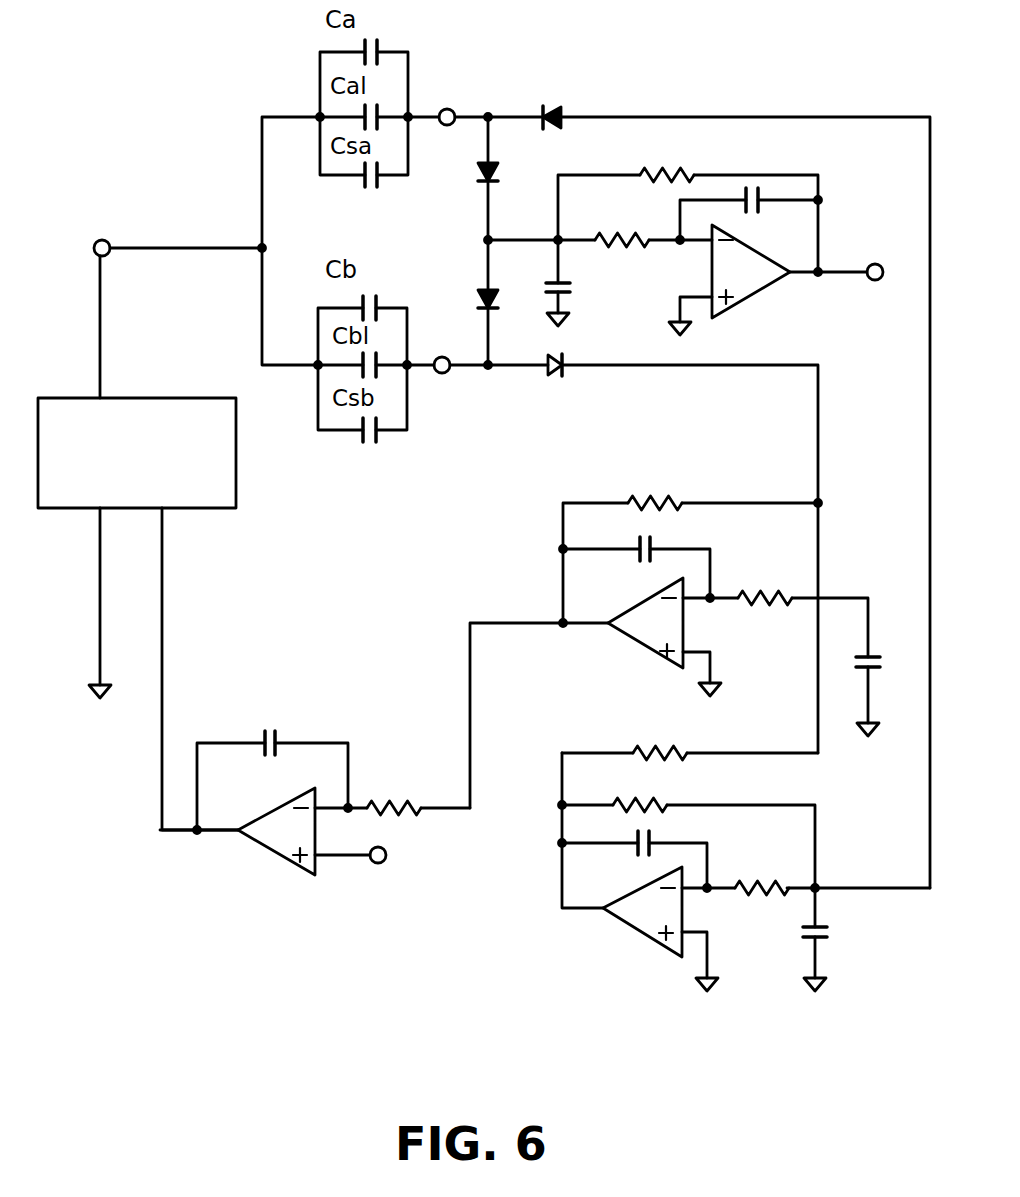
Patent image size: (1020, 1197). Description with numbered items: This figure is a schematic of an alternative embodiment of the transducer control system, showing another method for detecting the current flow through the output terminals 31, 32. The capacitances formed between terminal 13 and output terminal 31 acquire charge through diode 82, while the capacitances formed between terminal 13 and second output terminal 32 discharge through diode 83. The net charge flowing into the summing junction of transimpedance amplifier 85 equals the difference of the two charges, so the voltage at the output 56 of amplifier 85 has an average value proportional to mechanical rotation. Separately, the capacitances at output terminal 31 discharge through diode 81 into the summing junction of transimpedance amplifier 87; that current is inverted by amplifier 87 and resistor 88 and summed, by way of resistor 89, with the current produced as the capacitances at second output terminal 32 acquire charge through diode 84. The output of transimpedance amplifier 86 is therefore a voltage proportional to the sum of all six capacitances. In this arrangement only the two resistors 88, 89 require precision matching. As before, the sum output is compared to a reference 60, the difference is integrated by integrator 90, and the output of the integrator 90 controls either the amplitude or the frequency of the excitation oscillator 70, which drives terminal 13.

The terminal 13 is at (112, 242).
The output terminal 31 is at (450, 108).
The second output terminal 32 is at (440, 374).
The output 56 is at (877, 281).
The reference 60 is at (375, 863).
The excitation oscillator 70 is at (214, 508).
The diode 81 is at (558, 104).
The diode 82 is at (479, 163).
The diode 83 is at (478, 286).
The diode 84 is at (553, 374).
The transimpedance amplifier 85 is at (818, 338).
The transimpedance amplifier 86 is at (770, 694).
The transimpedance amplifier 87 is at (827, 998).
The resistor 88 is at (683, 757).
The resistor 89 is at (623, 801).
The integrator 90 is at (355, 920).